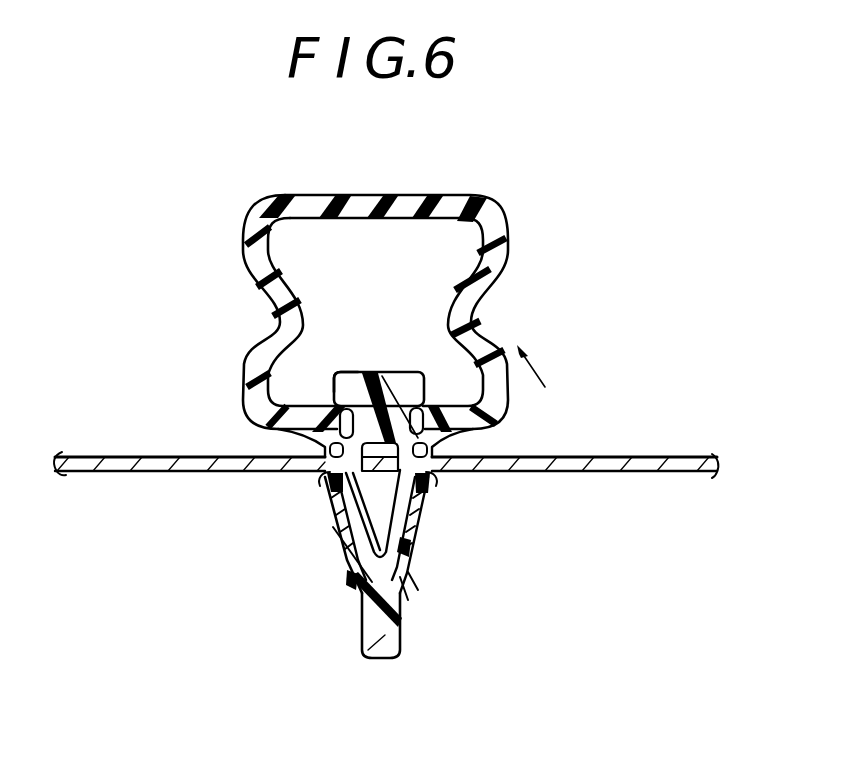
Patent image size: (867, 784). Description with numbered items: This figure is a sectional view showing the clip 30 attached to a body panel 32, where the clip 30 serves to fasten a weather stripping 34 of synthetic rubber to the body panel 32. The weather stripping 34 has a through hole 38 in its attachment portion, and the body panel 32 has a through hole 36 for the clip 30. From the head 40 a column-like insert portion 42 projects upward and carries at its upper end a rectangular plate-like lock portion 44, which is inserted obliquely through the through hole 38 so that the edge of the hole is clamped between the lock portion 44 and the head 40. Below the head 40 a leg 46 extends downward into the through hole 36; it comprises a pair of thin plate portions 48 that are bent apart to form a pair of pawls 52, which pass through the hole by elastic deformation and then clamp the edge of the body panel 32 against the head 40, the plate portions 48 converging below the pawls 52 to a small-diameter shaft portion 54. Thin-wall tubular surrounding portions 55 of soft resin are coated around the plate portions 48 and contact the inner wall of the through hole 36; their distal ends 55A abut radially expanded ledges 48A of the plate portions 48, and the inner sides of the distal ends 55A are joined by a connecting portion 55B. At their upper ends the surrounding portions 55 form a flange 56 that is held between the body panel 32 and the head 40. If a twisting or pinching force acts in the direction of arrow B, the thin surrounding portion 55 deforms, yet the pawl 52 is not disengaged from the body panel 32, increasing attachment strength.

The weather stripping 34 is at (358, 195).
The lock portion 44 is at (387, 373).
The through hole 38 is at (356, 372).
The head 40 is at (310, 442).
The flange 56 is at (300, 452).
The insert portion 42 is at (480, 438).
The body panel 32 is at (640, 453).
The arrow B is at (533, 366).
The pawls 52 is at (318, 483).
The clip 30 is at (330, 584).
The through hole 36 is at (340, 515).
The surrounding portions 55 is at (432, 512).
The plate portions 48 is at (343, 550).
The leg 46 is at (438, 575).
The ledges 48A is at (405, 575).
The distal ends 55A is at (345, 562).
The connecting portion 55B is at (405, 615).
The shaft portion 54 is at (380, 625).